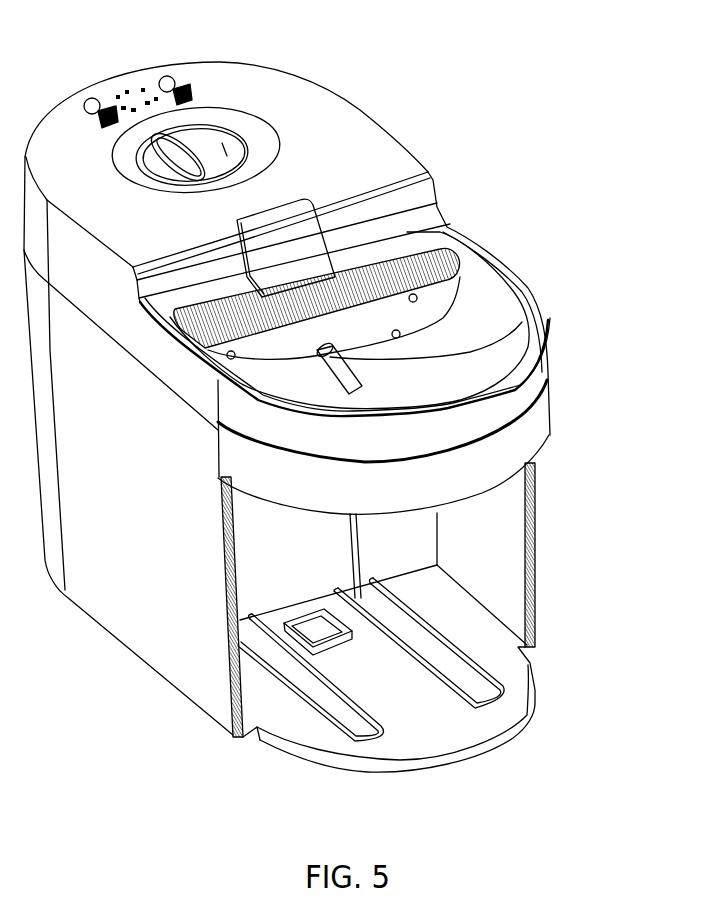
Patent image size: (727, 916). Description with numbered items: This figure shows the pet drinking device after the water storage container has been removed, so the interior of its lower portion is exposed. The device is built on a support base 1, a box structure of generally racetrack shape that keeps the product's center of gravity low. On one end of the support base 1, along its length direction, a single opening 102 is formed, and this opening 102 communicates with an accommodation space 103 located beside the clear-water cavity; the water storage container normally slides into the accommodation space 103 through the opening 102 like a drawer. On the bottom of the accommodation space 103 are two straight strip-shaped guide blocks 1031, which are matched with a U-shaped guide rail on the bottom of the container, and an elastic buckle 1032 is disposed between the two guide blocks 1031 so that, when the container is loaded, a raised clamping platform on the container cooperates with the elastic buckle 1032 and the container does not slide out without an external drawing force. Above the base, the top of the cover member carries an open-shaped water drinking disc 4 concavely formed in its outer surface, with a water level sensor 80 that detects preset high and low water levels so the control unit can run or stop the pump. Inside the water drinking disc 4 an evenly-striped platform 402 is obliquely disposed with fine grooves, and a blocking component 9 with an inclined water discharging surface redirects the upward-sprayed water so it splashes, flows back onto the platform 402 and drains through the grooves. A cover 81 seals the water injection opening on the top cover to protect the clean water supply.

The support base 1 is at (143, 635).
The water drinking disc 4 is at (477, 312).
The blocking component 9 is at (318, 218).
The water level sensor 80 is at (228, 358).
The cover 81 is at (198, 147).
The opening 102 is at (536, 521).
The accommodation space 103 is at (506, 588).
The evenly-striped platform 402 is at (432, 262).
The straight strip-shaped guide blocks 1031 is at (510, 698).
The elastic buckle 1032 is at (340, 653).